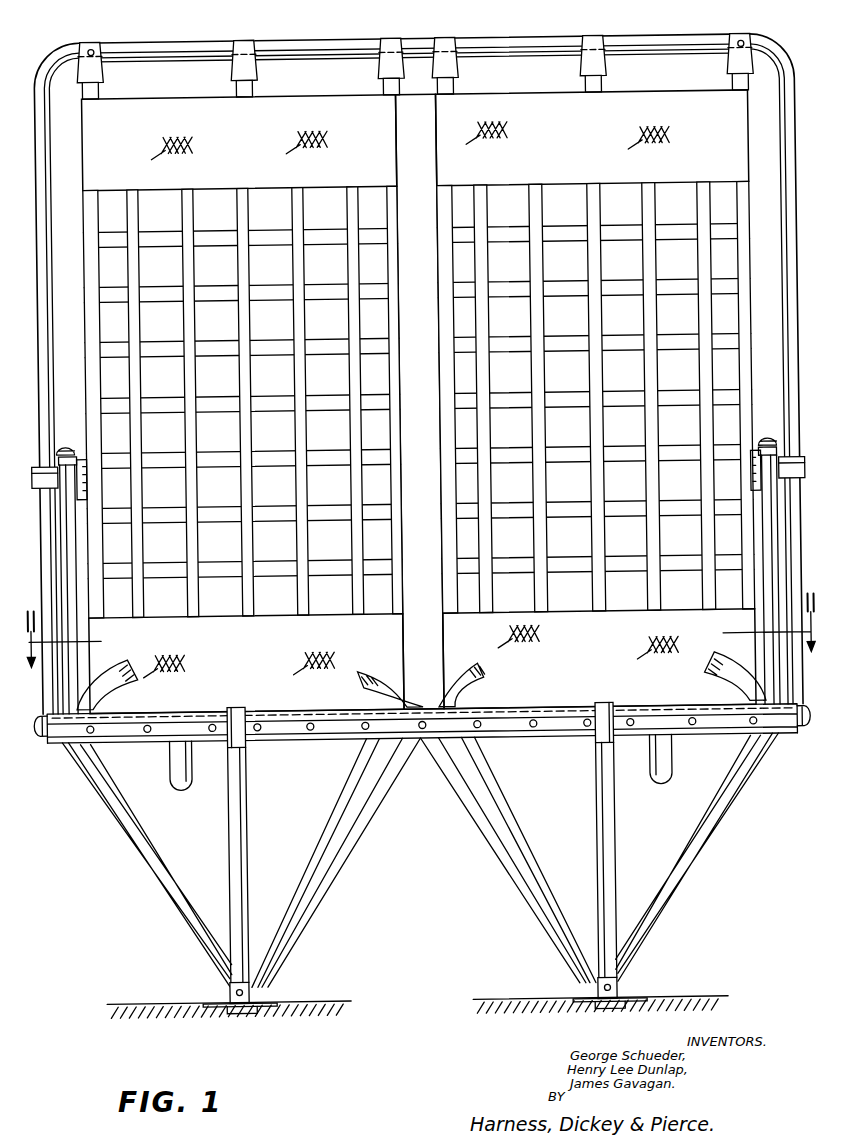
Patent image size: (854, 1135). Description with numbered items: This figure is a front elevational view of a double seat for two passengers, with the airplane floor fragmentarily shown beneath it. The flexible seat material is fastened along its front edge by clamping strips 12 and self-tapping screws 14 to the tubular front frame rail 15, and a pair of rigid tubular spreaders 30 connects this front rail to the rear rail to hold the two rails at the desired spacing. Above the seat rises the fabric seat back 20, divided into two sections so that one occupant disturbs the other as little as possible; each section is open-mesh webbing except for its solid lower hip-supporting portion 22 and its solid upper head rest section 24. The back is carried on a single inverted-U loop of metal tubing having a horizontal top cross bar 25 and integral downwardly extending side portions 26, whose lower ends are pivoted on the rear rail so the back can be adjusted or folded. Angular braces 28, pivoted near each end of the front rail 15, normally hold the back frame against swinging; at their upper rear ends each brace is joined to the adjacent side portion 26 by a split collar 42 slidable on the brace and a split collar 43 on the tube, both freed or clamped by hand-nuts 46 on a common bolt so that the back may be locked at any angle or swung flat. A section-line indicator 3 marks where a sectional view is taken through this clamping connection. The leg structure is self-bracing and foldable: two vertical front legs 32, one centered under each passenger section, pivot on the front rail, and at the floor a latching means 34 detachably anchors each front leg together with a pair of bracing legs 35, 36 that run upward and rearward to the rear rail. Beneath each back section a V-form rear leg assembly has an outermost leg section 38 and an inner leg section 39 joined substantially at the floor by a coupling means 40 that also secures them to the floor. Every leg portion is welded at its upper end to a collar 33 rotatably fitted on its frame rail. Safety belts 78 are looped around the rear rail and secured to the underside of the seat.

The section line indicator 3 is at (421, 642).
The clamping strips 12 is at (520, 730).
The self-tapping screws 14 is at (540, 729).
The tubular front frame rail 15 is at (290, 742).
The seat back 20 is at (398, 297).
The hip-supporting portion 22 is at (450, 622).
The head rest section 24 is at (456, 112).
The horizontal top cross bar 25 is at (331, 28).
The side portions 26 is at (52, 153).
The angular braces 28 is at (72, 660).
The tubular spreaders 30 is at (180, 784).
The front legs 32 is at (225, 834).
The collar 33 is at (238, 706).
The latching means 34 is at (258, 998).
The bracing leg 35 is at (459, 780).
The bracing leg 36 is at (99, 777).
The outermost leg section 38 is at (122, 774).
The inner leg section 39 is at (331, 812).
The coupling means 40 is at (589, 989).
The split collar 42 is at (78, 455).
The split collar 43 is at (47, 466).
The hand-nuts 46 is at (83, 498).
The safety belts 78 is at (476, 672).